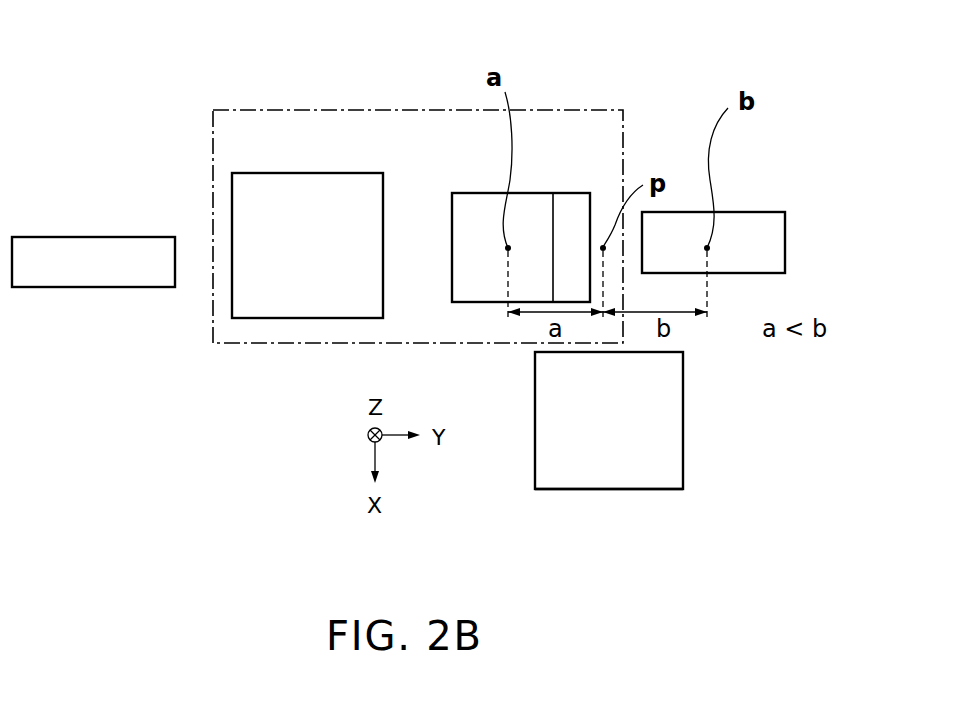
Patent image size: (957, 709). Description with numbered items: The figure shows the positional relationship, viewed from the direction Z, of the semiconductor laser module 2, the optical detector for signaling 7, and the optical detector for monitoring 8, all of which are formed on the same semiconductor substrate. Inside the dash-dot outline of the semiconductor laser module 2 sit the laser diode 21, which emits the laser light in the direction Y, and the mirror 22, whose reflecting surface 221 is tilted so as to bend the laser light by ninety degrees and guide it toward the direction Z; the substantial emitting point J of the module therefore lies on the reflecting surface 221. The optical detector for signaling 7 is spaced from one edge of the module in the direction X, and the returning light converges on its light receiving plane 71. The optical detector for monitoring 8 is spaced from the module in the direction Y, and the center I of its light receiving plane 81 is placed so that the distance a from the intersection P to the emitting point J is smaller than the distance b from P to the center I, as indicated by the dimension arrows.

The semiconductor laser module 2 is at (623, 138).
The optical detector for monitoring 8 is at (93, 245).
The laser diode 21 is at (272, 187).
The mirror 22 is at (572, 193).
The reflecting surface 221 is at (472, 205).
The light receiving plane 81 is at (762, 235).
The optical detector for signaling 7 is at (605, 490).
The light receiving plane 71 is at (643, 462).